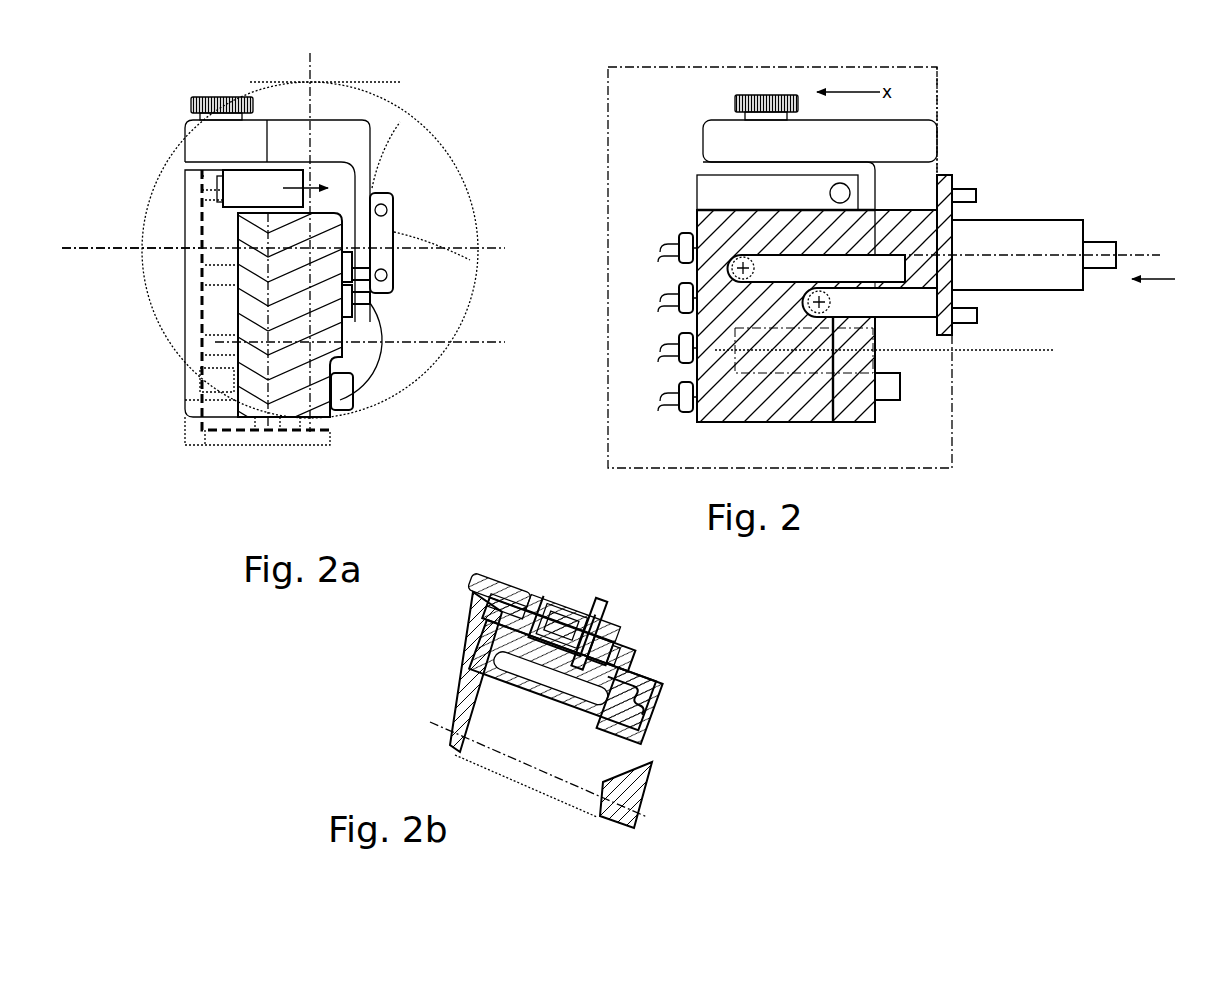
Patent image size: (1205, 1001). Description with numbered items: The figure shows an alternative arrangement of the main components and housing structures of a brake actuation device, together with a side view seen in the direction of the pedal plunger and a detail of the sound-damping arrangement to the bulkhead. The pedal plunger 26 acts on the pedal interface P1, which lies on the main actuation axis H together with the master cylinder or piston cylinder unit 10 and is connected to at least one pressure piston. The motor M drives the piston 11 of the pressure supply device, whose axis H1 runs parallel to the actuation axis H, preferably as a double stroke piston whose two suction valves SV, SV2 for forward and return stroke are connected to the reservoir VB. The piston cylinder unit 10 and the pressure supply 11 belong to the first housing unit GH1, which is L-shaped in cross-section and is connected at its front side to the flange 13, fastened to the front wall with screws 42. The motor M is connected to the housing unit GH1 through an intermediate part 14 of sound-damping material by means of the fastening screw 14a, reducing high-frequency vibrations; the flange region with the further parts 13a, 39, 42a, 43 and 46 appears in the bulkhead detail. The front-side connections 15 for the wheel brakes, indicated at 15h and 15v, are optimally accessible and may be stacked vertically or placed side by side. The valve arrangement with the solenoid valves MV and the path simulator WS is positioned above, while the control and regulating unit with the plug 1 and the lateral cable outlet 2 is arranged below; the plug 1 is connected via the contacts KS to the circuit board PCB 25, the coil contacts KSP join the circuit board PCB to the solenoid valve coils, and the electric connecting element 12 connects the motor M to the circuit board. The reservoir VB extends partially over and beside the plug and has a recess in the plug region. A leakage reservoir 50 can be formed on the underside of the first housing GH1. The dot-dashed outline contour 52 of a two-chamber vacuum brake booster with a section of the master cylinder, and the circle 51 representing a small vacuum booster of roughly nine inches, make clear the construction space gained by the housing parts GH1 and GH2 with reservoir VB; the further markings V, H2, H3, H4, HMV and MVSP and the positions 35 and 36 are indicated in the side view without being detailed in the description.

In FIG. 2, the plug 1 is at (700, 185).
In FIG. 2, the lateral outlet of the cable set 2 is at (830, 175).
In FIG. 2A, the master cylinder arrangement 10 is at (372, 190).
In FIG. 2, the piston cylinder arrangement of the pressure supply device 11 is at (832, 423).
In FIG. 2A, the electric connecting element 12 is at (205, 283).
In FIG. 2A, the flange 13 is at (470, 260).
In FIG. 2, the flange 13 is at (953, 178).
In FIG. 2B, the flange 13 is at (552, 585).
In FIG. 2B, the clamp 13a is at (568, 598).
In FIG. 2, the intermediate part 14 is at (850, 423).
In FIG. 2, the fastening screw 14a is at (890, 423).
In FIG. 2, the connections to the wheel brakes 15 is at (682, 232).
In FIG. 2A, the horizontal hole circle 15h is at (273, 207).
In FIG. 2A, the vertical pin 15v is at (205, 345).
In FIG. 2A, the circuit board PCB 25 is at (200, 375).
In FIG. 2, the pedal plunger 26 is at (1153, 230).
In FIG. 2A, the base wall 35 is at (210, 438).
In FIG. 2A, the wall 36 is at (205, 262).
In FIG. 2B, the bolt 39 is at (614, 607).
In FIG. 2A, the screws 42 is at (394, 196).
In FIG. 2, the screws 42 is at (978, 196).
In FIG. 2B, the nut 42a is at (631, 638).
In FIG. 2B, the clip 43 is at (577, 589).
In FIG. 2B, the cylinder body 46 is at (547, 722).
In FIG. 2A, the leakage reservoir 50 is at (348, 412).
In FIG. 2A, the circle 51 is at (385, 125).
In FIG. 2, the outline contour 52 is at (940, 70).
In FIG. 2A, the reservoir VB is at (262, 122).
In FIG. 2, the reservoir VB is at (940, 128).
In FIG. 2A, the vertical axis V is at (312, 56).
In FIG. 2A, the main axis H is at (440, 247).
In FIG. 2, the main axis H is at (1040, 235).
In FIG. 2A, the axis of motor and pressure supply H1 is at (340, 410).
In FIG. 2, the axis of motor and pressure supply H1 is at (898, 350).
In FIG. 2A, the horizontal line 2 H2 is at (410, 345).
In FIG. 2A, the height 3 H3 is at (295, 420).
In FIG. 2A, the height 4 H4 is at (388, 82).
In FIG. 2A, the height MV HMV is at (200, 232).
In FIG. 2A, the contacts KS is at (222, 172).
In FIG. 2A, the coil contacts KSP is at (205, 202).
In FIG. 2A, the solenoid valves MV is at (200, 395).
In FIG. 2A, the magnet point MVSP is at (202, 184).
In FIG. 2A, the circuit board PCB is at (200, 300).
In FIG. 2A, the suction valve SV is at (371, 272).
In FIG. 2, the suction valve SV is at (733, 268).
In FIG. 2A, the suction valve SV2 is at (371, 298).
In FIG. 2, the suction valve SV2 is at (808, 302).
In FIG. 2A, the path simulator WS is at (320, 420).
In FIG. 2A, the first housing unit GH1 is at (272, 420).
In FIG. 2A, the second housing part GH2 is at (252, 420).
In FIG. 2, the motor M is at (940, 468).
In FIG. 2, the pedal interface P1 is at (1080, 240).